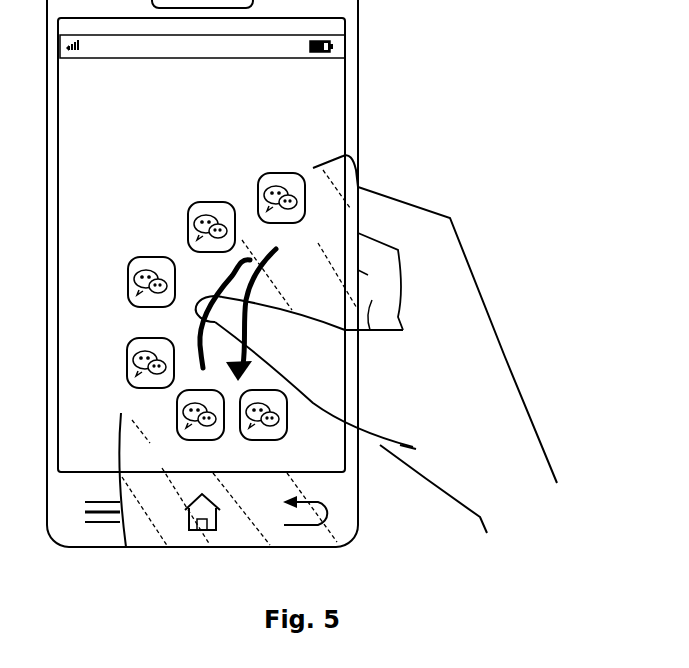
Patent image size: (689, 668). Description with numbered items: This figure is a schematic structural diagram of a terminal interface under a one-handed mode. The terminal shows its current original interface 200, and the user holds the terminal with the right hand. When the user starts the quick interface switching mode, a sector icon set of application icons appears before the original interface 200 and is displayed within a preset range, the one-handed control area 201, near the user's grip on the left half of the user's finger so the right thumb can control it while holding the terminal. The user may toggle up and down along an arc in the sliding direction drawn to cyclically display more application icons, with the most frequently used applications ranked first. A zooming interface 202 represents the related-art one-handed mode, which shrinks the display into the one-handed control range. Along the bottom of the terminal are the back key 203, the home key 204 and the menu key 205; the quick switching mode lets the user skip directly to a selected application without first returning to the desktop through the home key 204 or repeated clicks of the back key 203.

The original interface 200 is at (327, 103).
The one-handed control area 201 is at (350, 163).
The zooming interface 202 is at (318, 241).
The back key 203 is at (308, 533).
The home key 204 is at (200, 530).
The menu key 205 is at (95, 527).